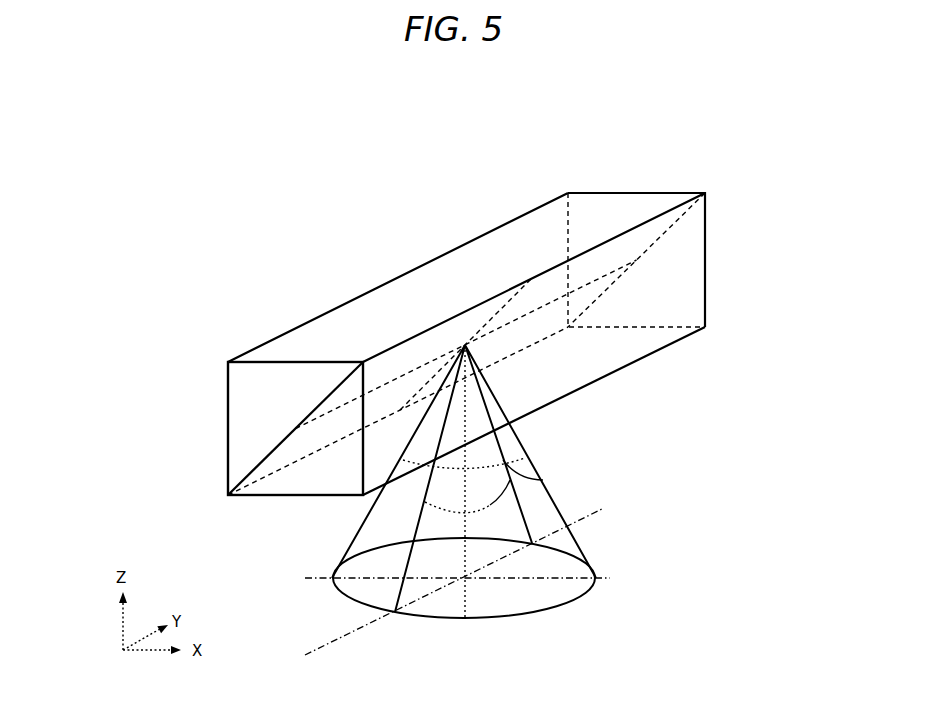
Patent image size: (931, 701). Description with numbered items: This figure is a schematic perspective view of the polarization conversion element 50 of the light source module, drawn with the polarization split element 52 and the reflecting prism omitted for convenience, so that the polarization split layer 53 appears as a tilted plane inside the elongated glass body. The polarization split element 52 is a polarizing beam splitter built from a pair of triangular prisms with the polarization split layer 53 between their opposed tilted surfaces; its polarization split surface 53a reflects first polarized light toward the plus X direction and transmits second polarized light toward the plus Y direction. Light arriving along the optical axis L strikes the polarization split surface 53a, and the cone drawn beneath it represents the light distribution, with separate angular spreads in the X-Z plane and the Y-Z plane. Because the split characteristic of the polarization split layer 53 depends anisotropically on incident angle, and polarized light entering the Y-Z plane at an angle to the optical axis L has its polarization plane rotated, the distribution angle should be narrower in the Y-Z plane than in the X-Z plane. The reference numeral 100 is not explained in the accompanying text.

The light source device 100 is at (757, 121).
The polarization conversion element 50 is at (711, 180).
The polarization split element 52 is at (400, 300).
The polarization split layer 53 is at (410, 372).
The polarization split surface 53a is at (313, 433).
The optical axis L is at (467, 403).